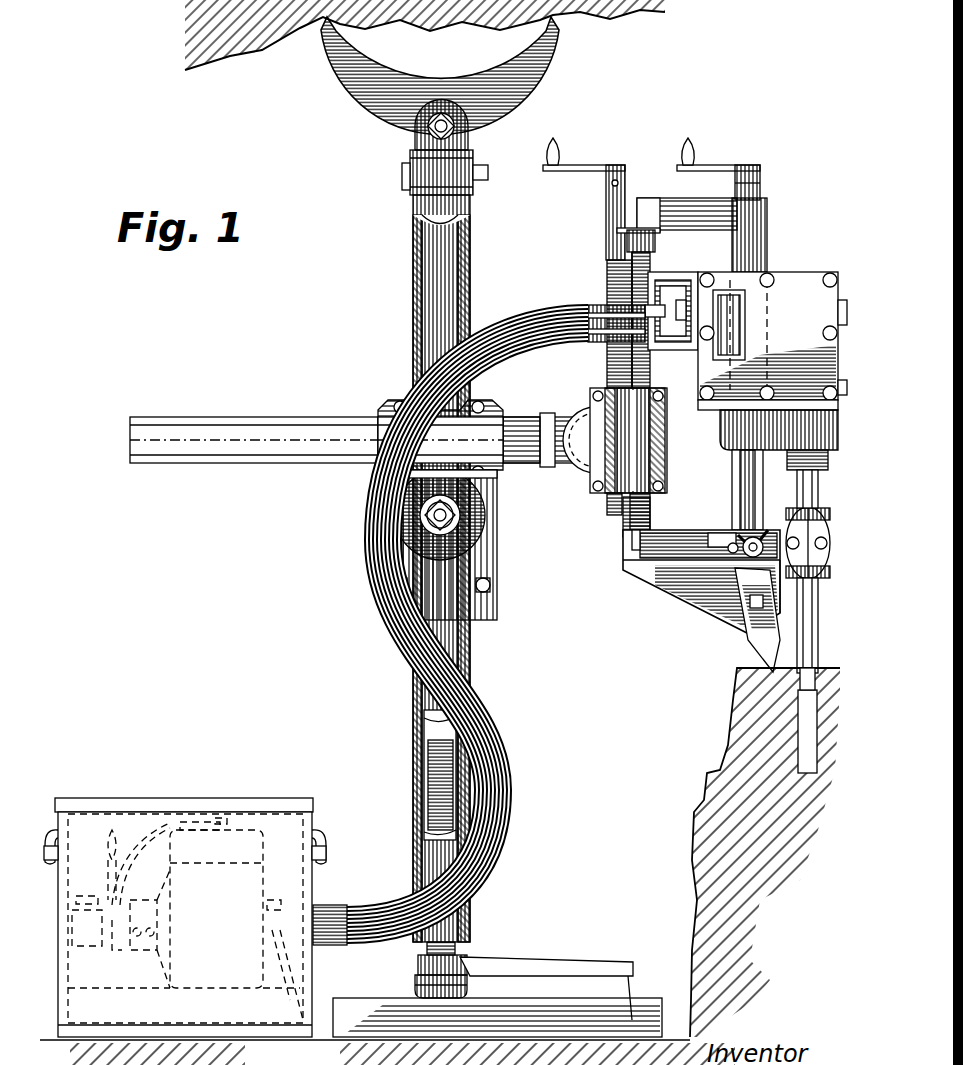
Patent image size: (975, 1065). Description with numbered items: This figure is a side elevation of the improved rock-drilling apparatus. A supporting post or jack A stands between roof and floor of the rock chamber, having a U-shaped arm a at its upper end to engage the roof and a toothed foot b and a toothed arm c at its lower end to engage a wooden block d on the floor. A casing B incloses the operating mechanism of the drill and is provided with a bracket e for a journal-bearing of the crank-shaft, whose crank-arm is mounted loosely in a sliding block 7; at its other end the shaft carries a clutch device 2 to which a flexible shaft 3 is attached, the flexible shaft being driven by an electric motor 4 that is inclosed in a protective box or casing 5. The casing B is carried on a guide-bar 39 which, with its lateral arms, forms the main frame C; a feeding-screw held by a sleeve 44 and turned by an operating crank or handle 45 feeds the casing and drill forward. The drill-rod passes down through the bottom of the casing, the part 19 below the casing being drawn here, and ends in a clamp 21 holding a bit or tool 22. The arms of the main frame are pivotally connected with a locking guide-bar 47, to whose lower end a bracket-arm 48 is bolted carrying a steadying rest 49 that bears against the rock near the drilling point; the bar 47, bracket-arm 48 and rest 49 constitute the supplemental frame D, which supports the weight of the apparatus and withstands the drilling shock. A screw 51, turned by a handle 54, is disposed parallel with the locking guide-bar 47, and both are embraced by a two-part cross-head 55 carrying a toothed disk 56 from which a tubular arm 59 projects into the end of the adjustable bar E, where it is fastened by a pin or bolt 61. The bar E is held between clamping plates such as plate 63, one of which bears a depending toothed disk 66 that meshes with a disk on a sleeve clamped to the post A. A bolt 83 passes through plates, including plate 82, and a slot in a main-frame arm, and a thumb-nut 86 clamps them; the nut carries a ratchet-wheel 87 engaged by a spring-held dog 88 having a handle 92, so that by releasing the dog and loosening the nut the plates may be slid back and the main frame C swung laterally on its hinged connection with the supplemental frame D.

The U-shaped arm a is at (440, 76).
The supporting post or jack A is at (453, 568).
The adjustable bar E is at (351, 428).
The clamping plate 63 is at (503, 417).
The depending disk 66 is at (488, 530).
The block 7 is at (452, 520).
The tubular arm or extension 59 is at (513, 463).
The pin or bolt 61 is at (546, 468).
The disk 56 is at (588, 466).
The cross-head 55 is at (660, 454).
The supplemental frame D is at (625, 516).
The screw 51 is at (607, 270).
The operating arm or handle 54 is at (584, 199).
The operating crank or handle 45 is at (718, 154).
The sleeve 44 is at (762, 181).
The main frame C is at (677, 228).
The guide-bar 39 is at (767, 241).
The bracket e is at (662, 290).
The clutch device 2 is at (616, 314).
The flexible shaft 3 is at (450, 620).
The casing B is at (772, 361).
The thumb-nut 86 is at (760, 530).
The clamp 21 is at (835, 546).
The drive shaft 19 is at (818, 489).
The bit or tool 22 is at (818, 625).
The locking guide-bar 47 is at (648, 517).
The bracket-arm 48 is at (690, 603).
The steadying rest or arm 49 is at (758, 636).
The bolt 83 is at (780, 580).
The plate 82 is at (712, 540).
The arm or handle 92 is at (730, 545).
The dog 88 is at (742, 532).
The ratchet-wheel 87 is at (760, 540).
The wooden block d is at (522, 1008).
The toothed foot b is at (414, 987).
The toothed arm c is at (546, 980).
The box or casing 5 is at (185, 911).
The electric motor 4 is at (185, 919).